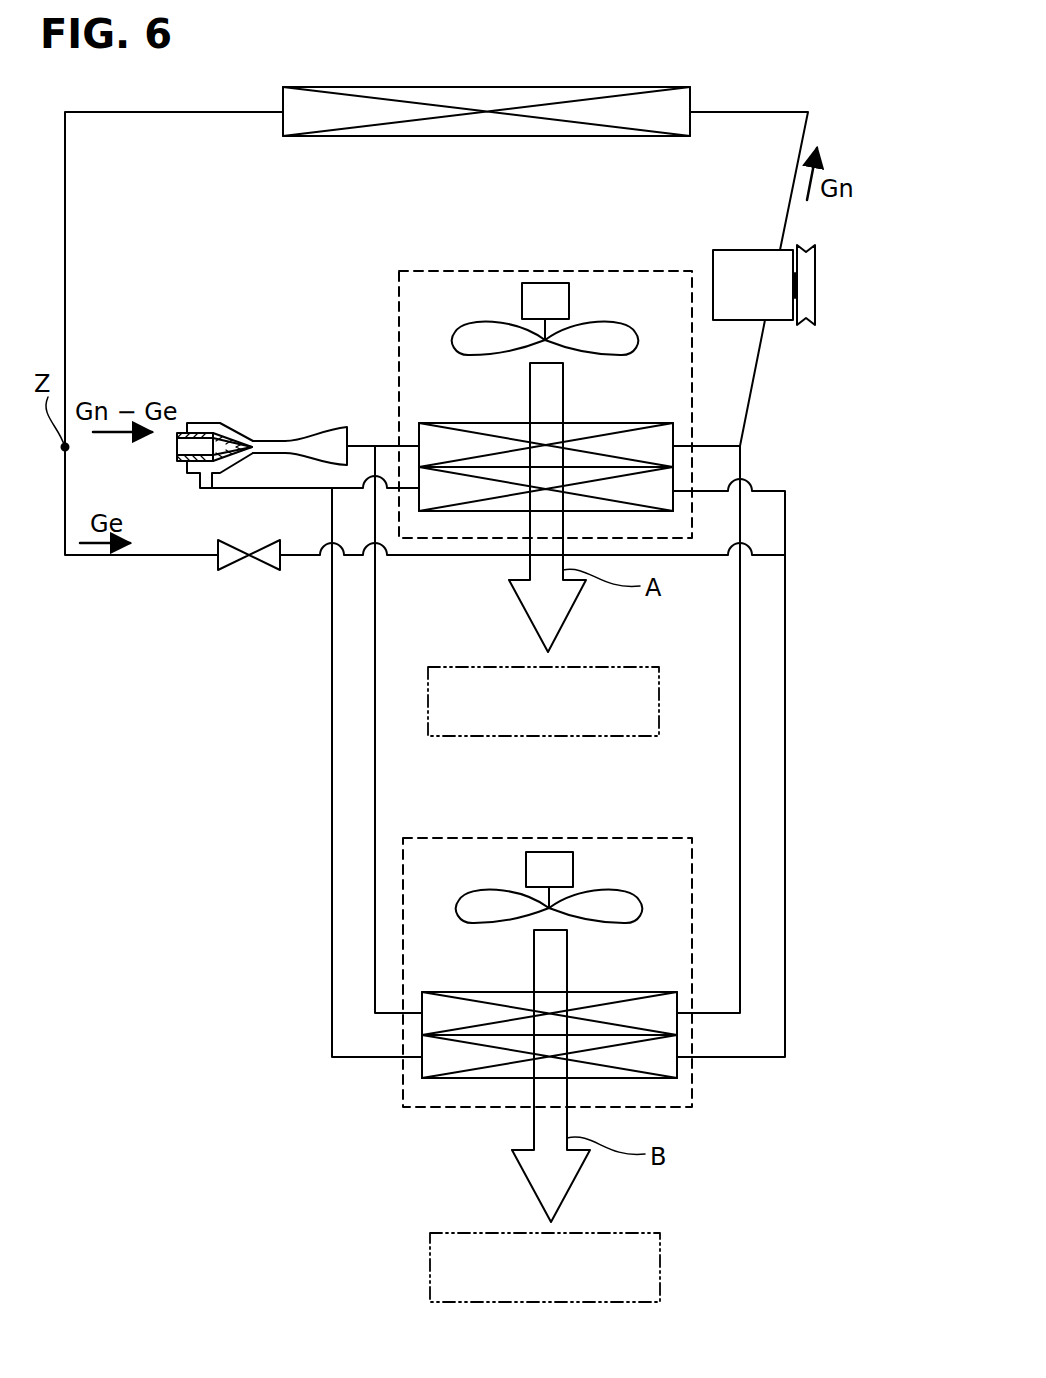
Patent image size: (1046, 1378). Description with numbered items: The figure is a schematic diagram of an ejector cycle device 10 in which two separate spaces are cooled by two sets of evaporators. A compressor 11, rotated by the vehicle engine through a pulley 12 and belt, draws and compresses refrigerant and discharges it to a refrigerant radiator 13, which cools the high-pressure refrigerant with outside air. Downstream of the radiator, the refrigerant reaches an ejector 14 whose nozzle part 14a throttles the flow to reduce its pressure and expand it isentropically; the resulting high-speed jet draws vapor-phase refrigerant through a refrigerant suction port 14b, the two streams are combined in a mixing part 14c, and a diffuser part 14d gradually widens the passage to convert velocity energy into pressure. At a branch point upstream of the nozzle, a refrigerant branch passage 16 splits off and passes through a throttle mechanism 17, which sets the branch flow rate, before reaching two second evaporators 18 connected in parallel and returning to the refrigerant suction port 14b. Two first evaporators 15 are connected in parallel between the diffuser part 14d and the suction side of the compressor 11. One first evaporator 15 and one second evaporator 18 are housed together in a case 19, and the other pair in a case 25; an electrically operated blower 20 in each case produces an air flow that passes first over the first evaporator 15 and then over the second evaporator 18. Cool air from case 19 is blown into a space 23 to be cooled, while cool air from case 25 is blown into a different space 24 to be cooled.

The ejector cycle device 10 is at (757, 102).
The compressor 11 is at (740, 250).
The pulley 12 is at (815, 260).
The refrigerant radiator 13 is at (582, 87).
The ejector 14 is at (260, 408).
The nozzle part 14a is at (215, 425).
The refrigerant suction port 14b is at (200, 480).
The mixing part 14c is at (286, 441).
The diffuser part 14d is at (320, 445).
The first evaporator 15 is at (640, 423).
The refrigerant branch passage 16 is at (172, 560).
The throttle mechanism 17 is at (238, 572).
The second evaporator 18 is at (447, 492).
The case 19 is at (692, 393).
The electrically operated blower 20 is at (470, 328).
The space to be cooled 23 is at (660, 692).
The space to be cooled 24 is at (661, 1262).
The case 25 is at (694, 953).